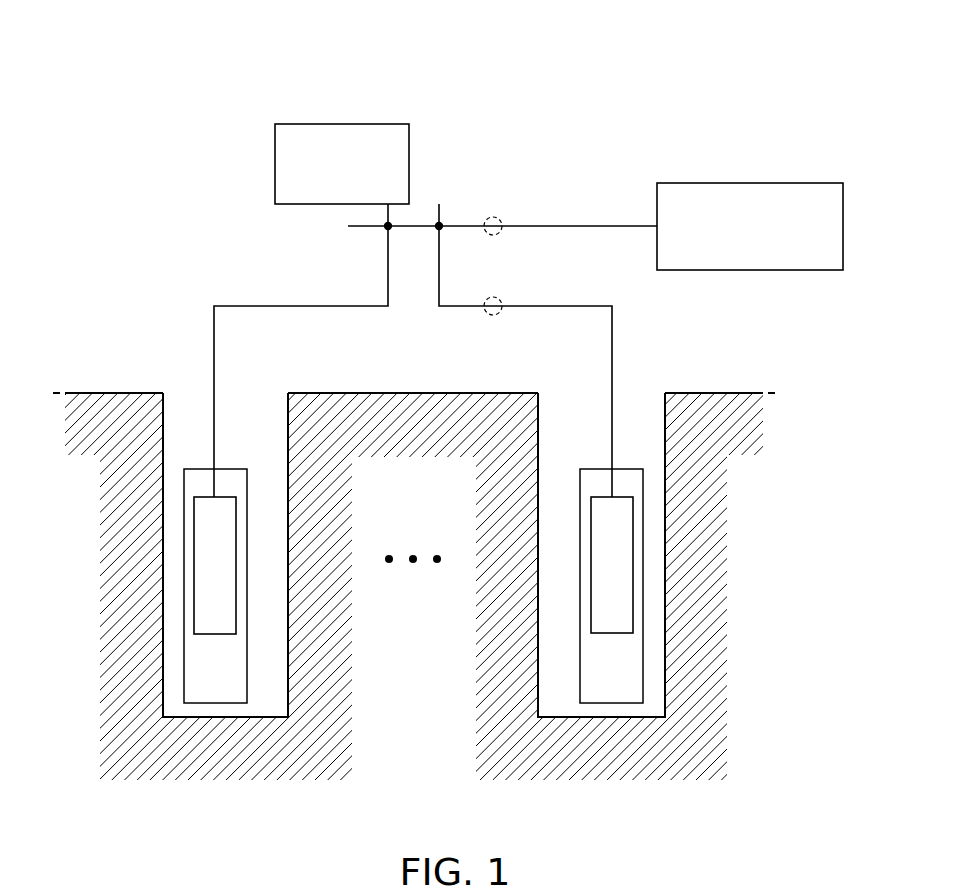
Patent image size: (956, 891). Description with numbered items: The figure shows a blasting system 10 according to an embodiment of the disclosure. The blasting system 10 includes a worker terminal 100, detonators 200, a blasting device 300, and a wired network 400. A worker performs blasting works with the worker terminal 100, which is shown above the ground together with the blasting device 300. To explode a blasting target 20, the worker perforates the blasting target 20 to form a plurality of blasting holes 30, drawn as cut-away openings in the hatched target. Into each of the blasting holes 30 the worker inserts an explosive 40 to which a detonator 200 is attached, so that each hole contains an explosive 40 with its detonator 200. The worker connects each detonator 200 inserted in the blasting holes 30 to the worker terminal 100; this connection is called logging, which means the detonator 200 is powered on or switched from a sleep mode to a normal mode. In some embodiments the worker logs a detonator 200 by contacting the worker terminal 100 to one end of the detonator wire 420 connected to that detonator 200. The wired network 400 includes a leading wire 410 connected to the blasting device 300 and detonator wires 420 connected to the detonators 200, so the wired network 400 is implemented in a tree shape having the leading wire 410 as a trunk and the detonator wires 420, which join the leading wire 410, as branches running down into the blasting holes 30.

The blasting system 10 is at (619, 98).
The blasting target 20 is at (725, 393).
The blasting hole 30 is at (288, 405).
The explosive 40 is at (248, 637).
The worker terminal 100 is at (393, 124).
The detonator 200 is at (220, 634).
The blasting device 300 is at (657, 213).
The wired network 400 is at (502, 266).
The leading wire 410 is at (496, 236).
The detonator wire 420 is at (522, 292).